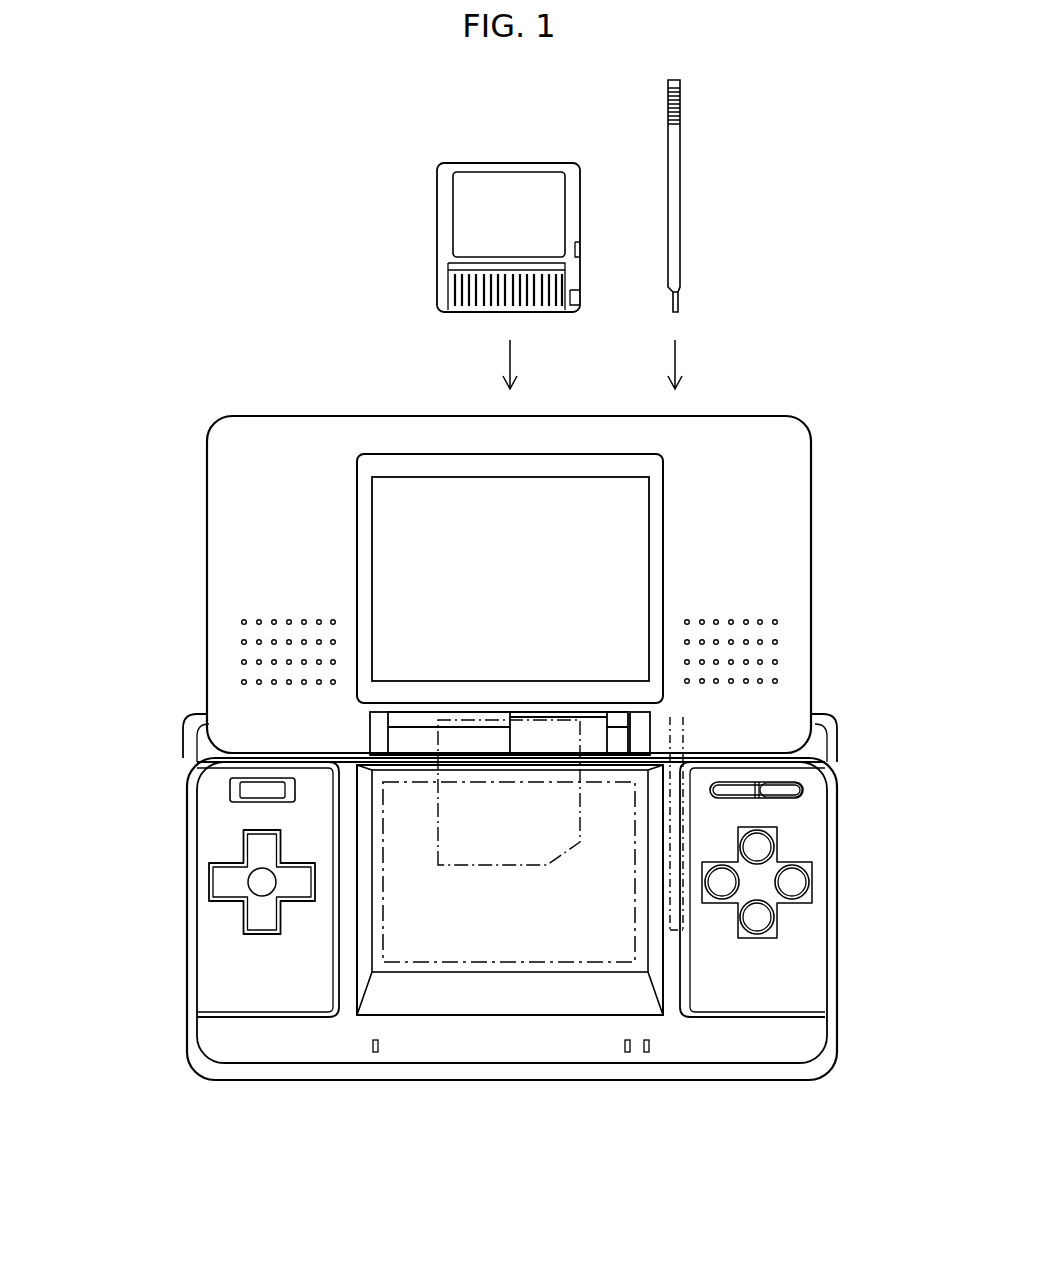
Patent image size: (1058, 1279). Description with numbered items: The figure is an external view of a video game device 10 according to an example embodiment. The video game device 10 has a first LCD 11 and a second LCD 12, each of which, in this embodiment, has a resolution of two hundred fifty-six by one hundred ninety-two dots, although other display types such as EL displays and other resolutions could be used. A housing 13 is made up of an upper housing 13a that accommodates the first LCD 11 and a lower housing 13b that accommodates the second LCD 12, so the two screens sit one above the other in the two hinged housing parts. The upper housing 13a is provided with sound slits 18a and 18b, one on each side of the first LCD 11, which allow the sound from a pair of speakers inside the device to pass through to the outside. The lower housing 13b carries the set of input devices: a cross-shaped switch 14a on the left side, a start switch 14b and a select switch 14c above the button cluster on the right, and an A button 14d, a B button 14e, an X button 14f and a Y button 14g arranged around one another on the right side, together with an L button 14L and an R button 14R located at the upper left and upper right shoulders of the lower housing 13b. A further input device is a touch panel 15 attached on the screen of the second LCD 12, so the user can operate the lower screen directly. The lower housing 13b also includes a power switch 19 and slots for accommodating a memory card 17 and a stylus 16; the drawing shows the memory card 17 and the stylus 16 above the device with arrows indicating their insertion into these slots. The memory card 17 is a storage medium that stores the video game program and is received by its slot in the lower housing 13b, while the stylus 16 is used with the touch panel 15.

The video game device 10 is at (206, 220).
The first LCD 11 is at (392, 510).
The second LCD 12 is at (553, 966).
The housing 13 is at (496, 756).
The upper housing 13a is at (521, 547).
The lower housing 13b is at (496, 923).
The cross-shaped switch 14a is at (208, 875).
The start switch 14b is at (793, 797).
The select switch 14c is at (743, 780).
The A button 14d is at (810, 880).
The B button 14e is at (790, 915).
The X button 14f is at (800, 847).
The Y button 14g is at (722, 900).
The L button 14L is at (183, 727).
The R button 14R is at (837, 715).
The touch panel 15 is at (403, 962).
The stylus 16 is at (680, 127).
The memory card 17 is at (545, 163).
The sound slit 18a is at (245, 660).
The sound slit 18b is at (775, 622).
The power switch 19 is at (230, 783).